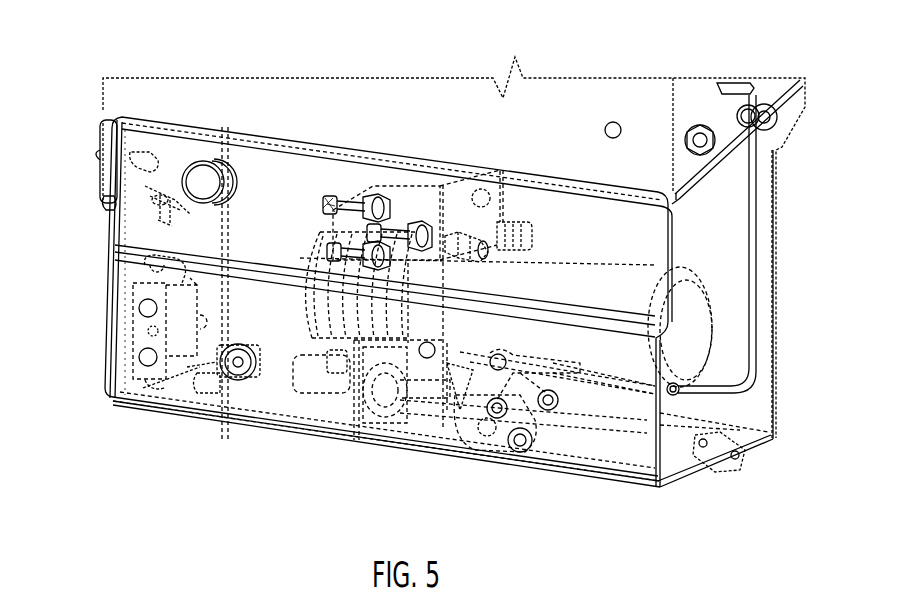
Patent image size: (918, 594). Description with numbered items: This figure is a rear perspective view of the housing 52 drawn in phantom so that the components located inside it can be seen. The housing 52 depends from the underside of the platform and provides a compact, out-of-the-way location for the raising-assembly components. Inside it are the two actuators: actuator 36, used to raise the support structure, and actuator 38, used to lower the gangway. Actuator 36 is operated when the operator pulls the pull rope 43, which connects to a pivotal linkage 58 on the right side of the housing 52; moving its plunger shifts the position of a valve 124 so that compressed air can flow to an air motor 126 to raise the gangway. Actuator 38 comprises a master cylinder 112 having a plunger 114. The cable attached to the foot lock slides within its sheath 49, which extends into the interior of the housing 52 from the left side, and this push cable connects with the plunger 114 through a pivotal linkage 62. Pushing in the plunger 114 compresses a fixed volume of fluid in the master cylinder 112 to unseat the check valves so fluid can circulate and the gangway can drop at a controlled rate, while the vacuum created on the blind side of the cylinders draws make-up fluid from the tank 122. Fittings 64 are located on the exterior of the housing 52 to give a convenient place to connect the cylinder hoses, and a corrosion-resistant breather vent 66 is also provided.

The actuator 36 is at (127, 325).
The actuator 38 is at (293, 407).
The pull rope 43 is at (110, 118).
The sheath 49 is at (751, 253).
The housing 52 is at (753, 393).
The pivotal linkage 58 is at (106, 207).
The pivotal linkage 62 is at (580, 412).
The fittings 64 is at (348, 185).
The breather vent 66 is at (203, 173).
The master cylinder 112 is at (320, 400).
The plunger 114 is at (393, 430).
The tank 122 is at (697, 332).
The valve 124 is at (133, 297).
The air motor 126 is at (228, 400).